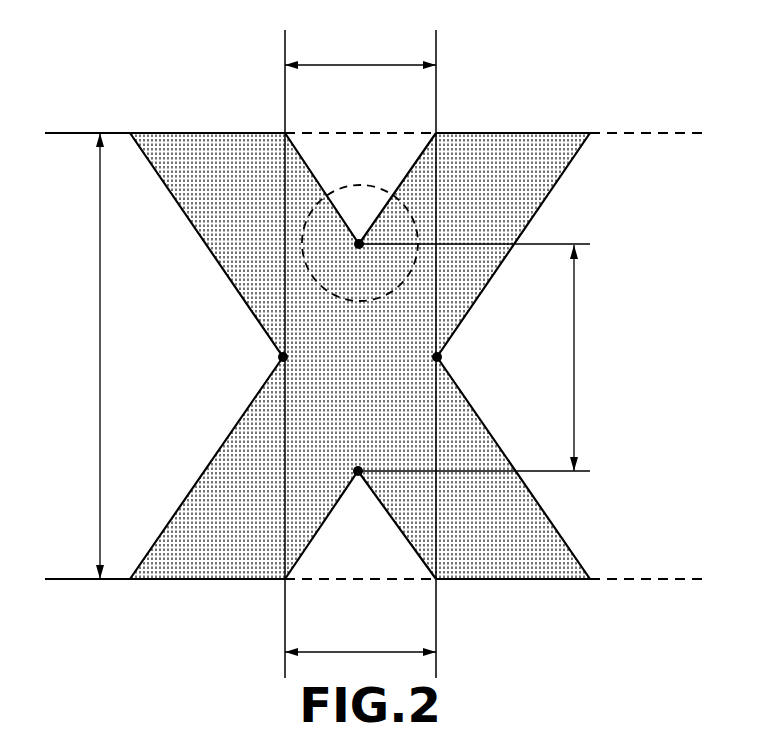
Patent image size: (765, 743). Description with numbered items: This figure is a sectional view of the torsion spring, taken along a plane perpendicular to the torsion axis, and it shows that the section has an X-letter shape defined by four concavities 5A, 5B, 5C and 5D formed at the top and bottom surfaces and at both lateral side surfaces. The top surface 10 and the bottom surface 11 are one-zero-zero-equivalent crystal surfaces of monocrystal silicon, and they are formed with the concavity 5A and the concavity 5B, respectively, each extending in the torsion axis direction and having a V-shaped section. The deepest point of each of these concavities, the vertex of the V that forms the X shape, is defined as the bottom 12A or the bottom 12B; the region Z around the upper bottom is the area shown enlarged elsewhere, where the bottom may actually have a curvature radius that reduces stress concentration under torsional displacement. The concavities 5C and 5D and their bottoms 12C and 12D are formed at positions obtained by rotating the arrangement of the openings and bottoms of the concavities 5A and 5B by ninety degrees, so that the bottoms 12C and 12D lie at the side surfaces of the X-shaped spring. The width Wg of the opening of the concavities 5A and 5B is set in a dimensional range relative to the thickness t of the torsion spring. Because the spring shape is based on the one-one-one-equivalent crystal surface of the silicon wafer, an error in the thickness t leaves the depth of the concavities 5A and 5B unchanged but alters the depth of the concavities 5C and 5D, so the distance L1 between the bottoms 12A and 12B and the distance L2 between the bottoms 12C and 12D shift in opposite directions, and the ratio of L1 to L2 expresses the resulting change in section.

The concavity 5A is at (325, 155).
The concavity 5B is at (385, 524).
The concavity 5C is at (211, 319).
The concavity 5D is at (602, 314).
The bottom 12A is at (359, 244).
The bottom 12B is at (358, 471).
The bottom 12C is at (283, 357).
The bottom 12D is at (437, 357).
The top surface 10 is at (634, 133).
The bottom surface 11 is at (634, 579).
The region Z is at (368, 186).
The width of the opening Wg is at (360, 49).
The thickness t is at (91, 356).
The distance L1 is at (474, 357).
The distance L2 is at (360, 637).